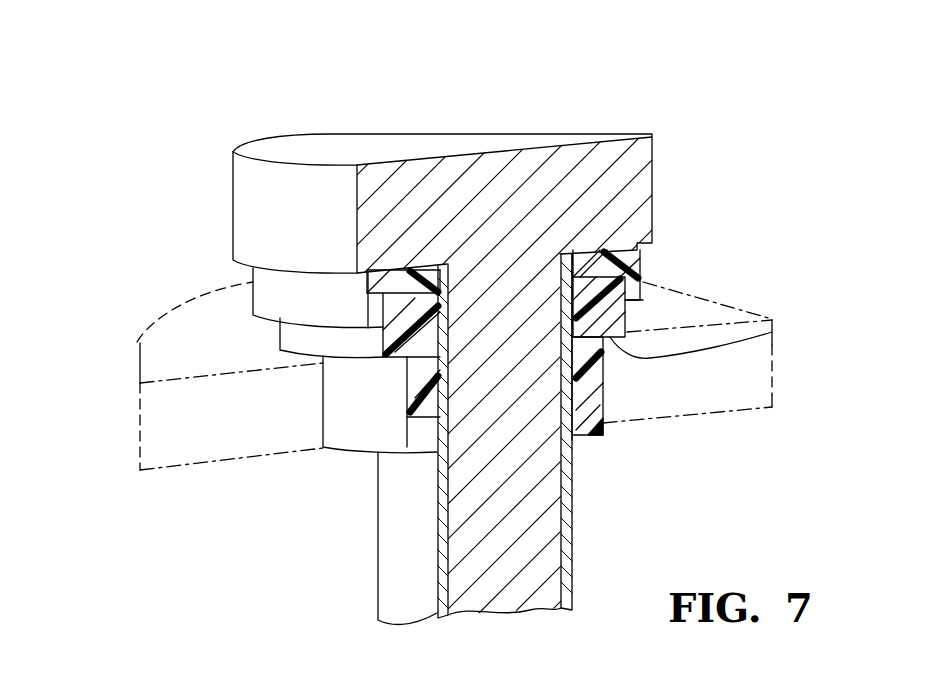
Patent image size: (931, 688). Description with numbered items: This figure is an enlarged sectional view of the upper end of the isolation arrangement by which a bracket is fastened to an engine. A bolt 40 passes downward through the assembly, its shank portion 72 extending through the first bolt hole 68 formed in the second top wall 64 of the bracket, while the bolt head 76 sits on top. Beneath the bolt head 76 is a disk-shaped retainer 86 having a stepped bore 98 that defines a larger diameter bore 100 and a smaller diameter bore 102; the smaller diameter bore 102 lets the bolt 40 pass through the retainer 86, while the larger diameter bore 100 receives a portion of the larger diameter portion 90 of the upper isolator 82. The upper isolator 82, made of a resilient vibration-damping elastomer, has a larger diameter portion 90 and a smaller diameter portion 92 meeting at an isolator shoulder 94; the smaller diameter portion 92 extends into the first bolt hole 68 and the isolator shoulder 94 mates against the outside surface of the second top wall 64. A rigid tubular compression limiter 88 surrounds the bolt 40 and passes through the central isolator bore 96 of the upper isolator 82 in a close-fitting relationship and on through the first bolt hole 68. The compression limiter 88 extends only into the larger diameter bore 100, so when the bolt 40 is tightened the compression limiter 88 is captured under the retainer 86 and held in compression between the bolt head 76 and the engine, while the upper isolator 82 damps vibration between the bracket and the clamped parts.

The bolt 40 is at (504, 465).
The shank portion 72 is at (478, 562).
The second top wall 64 is at (193, 350).
The first bolt hole 68 is at (417, 447).
The bolt head 76 is at (583, 153).
The upper isolator 82 is at (598, 397).
The retainer 86 is at (627, 253).
The compression limiter 88 is at (573, 557).
The larger diameter portion 90 is at (625, 297).
The smaller diameter portion 92 is at (593, 383).
The isolator shoulder 94 is at (772, 332).
The isolator bore 96 is at (566, 422).
The stepped bore 98 is at (373, 267).
The larger diameter bore 100 is at (384, 303).
The smaller diameter bore 102 is at (452, 268).